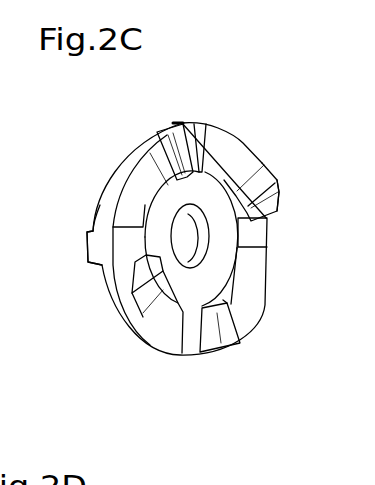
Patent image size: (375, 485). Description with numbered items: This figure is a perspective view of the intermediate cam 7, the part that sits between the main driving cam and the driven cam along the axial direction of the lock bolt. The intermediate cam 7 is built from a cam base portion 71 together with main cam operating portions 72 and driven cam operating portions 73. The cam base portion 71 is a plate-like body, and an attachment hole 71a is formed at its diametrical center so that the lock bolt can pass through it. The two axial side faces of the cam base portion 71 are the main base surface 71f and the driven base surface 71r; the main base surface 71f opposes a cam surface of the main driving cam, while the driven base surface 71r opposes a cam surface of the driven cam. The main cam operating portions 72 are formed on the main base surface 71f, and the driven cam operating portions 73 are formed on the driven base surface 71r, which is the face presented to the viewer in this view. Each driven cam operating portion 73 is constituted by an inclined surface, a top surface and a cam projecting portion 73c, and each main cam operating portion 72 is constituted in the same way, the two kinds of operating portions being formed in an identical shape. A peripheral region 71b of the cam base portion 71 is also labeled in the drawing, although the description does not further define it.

The intermediate cam 7 is at (196, 242).
The cam base portion 71 is at (204, 242).
The attachment hole 71a is at (188, 228).
The peripheral portion 71b is at (262, 165).
The main base surface 71f is at (103, 287).
The driven base surface 71r is at (252, 235).
The main cam operating portion 72 is at (84, 236).
The driven cam operating portion 73 is at (157, 135).
The cam projecting portion 73c is at (270, 197).